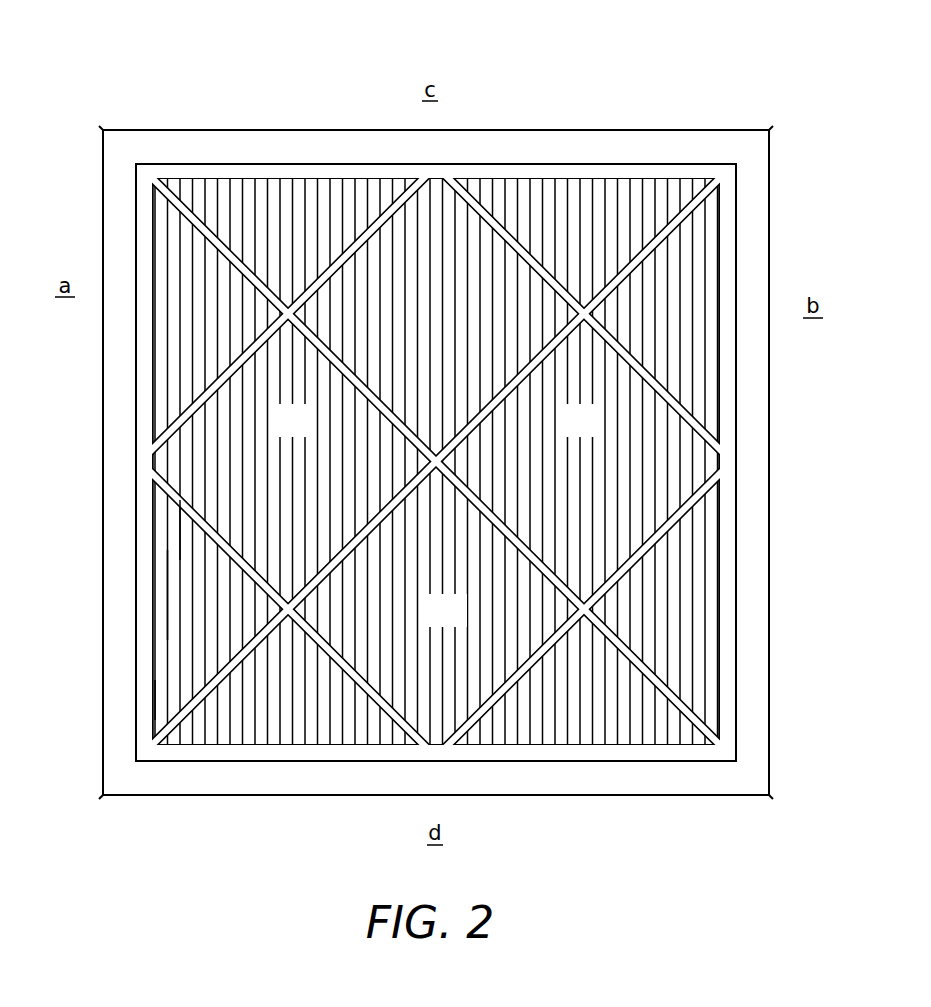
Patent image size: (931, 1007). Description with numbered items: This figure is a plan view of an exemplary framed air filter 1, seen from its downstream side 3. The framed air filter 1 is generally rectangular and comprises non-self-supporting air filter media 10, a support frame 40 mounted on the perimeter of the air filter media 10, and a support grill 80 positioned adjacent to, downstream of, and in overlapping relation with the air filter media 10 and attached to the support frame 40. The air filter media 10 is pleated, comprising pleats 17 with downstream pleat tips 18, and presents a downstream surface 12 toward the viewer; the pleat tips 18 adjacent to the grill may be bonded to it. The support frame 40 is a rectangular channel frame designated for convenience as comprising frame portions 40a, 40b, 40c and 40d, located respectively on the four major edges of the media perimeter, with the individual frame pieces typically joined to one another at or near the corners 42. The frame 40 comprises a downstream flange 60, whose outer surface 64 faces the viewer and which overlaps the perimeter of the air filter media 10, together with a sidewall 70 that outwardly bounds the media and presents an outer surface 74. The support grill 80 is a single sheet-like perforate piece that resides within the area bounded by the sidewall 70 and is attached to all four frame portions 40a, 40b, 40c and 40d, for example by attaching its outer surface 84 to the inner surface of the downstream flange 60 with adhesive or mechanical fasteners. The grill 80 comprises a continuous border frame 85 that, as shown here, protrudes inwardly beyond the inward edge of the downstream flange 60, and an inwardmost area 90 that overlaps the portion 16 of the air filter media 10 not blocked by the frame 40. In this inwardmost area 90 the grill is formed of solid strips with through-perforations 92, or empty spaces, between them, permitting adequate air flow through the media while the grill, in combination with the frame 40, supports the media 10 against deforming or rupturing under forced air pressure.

The framed air filter 1 is at (112, 30).
The downstream side 3 is at (162, 697).
The non-self-supporting air filter media 10 is at (175, 657).
The downstream surface 12 is at (175, 617).
The portion of air filter media not blocked by frame 16 is at (432, 622).
The pleats 17 is at (175, 577).
The downstream pleat tips 18 is at (180, 528).
The support frame 40 is at (758, 173).
The frame portion 40a is at (110, 185).
The frame portion 40b is at (758, 212).
The frame portion 40c is at (607, 143).
The frame portion 40d is at (704, 783).
The corners 42 is at (103, 130).
The downstream flange 60 is at (758, 258).
The outer surface of downstream flange 64 is at (197, 138).
The sidewall 70 is at (302, 796).
The outer surface of sidewall 74 is at (773, 634).
The support grill 80 is at (170, 727).
The outer surface of support grill 84 is at (597, 752).
The continuous border frame 85 is at (297, 172).
The inwardmost area of support grill 90 is at (272, 432).
The through-perforations 92 is at (563, 432).